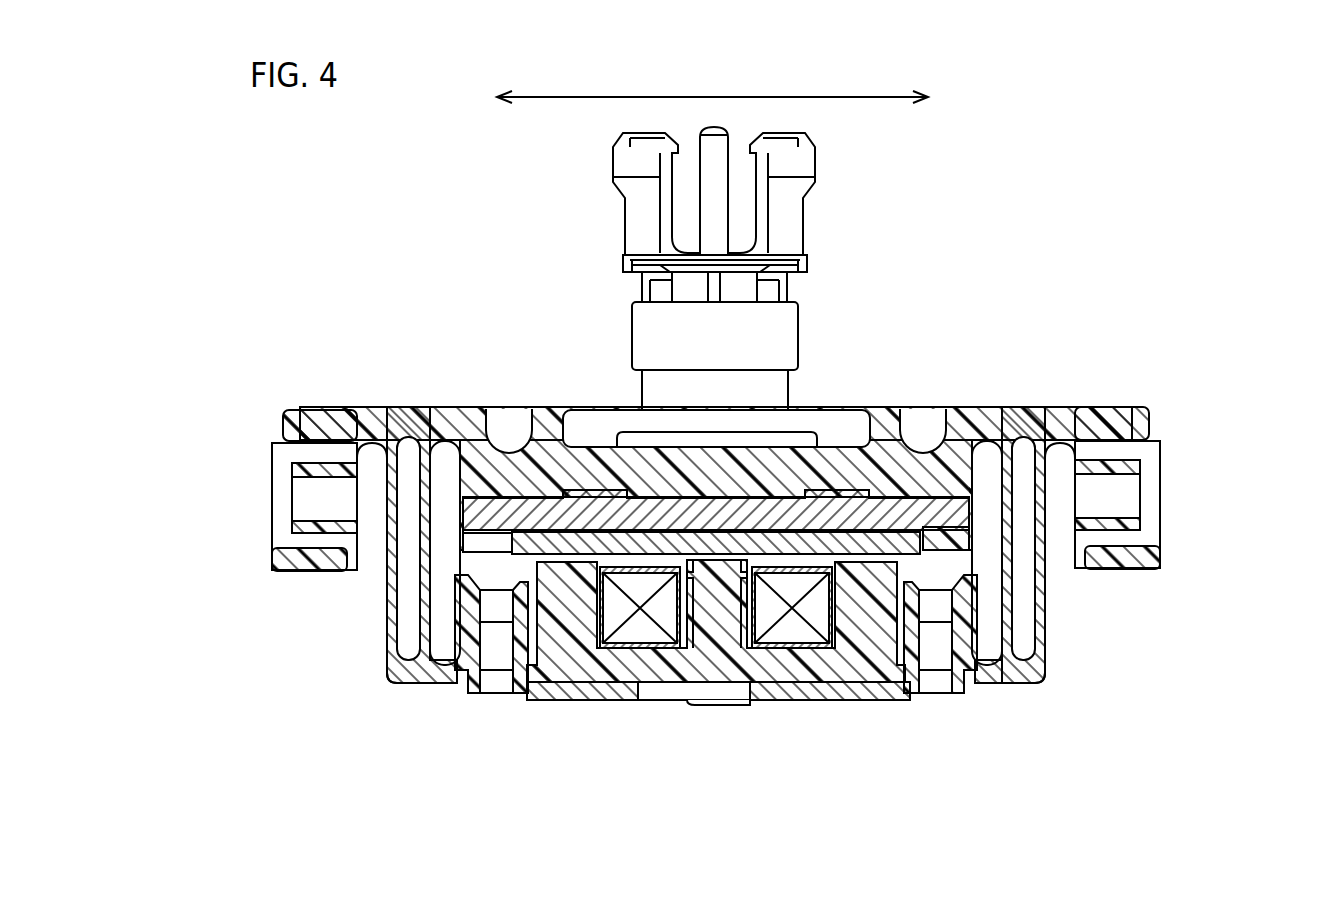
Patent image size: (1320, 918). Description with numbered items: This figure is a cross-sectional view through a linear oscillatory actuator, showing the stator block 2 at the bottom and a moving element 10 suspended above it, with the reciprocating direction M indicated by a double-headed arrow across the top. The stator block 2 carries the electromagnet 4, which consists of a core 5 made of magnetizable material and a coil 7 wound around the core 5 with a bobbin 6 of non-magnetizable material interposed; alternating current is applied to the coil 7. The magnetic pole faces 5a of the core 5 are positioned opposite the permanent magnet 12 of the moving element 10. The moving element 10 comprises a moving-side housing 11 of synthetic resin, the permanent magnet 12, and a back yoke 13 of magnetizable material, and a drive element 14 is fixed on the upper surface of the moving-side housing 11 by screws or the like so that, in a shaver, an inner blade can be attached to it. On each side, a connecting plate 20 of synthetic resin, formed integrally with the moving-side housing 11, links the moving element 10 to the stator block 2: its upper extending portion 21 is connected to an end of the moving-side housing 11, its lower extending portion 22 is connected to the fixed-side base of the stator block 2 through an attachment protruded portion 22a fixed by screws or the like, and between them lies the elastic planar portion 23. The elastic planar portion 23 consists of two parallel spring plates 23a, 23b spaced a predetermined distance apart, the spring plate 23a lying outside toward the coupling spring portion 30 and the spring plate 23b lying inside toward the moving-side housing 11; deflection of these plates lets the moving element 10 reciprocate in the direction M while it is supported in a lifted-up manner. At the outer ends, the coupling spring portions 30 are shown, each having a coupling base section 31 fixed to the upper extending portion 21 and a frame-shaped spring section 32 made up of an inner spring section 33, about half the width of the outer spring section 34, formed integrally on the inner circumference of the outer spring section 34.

The reciprocating direction M is at (712, 96).
The stator block 2 is at (541, 708).
The electromagnet 4 is at (700, 703).
The core 5 is at (863, 700).
The magnetic pole face 5a is at (557, 545).
The bobbin 6 is at (790, 620).
The coil 7 is at (762, 650).
The moving element 10 is at (890, 452).
The moving-side housing 11 is at (420, 425).
The permanent magnet 12 is at (577, 545).
The back yoke 13 is at (716, 545).
The drive element 14 is at (790, 220).
The connecting plate 20 is at (384, 580).
The upper extending portion 21 is at (1008, 435).
The lower extending portion 22 is at (407, 688).
The attachment protruded portion 22a is at (532, 690).
The elastic planar portion 23 is at (300, 615).
The spring plate 23a is at (402, 628).
The spring plate 23b is at (416, 650).
The coupling spring portion 30 is at (270, 460).
The coupling base section 31 is at (370, 425).
The spring section 32 is at (182, 518).
The inner spring section 33 is at (291, 528).
The outer spring section 34 is at (291, 560).